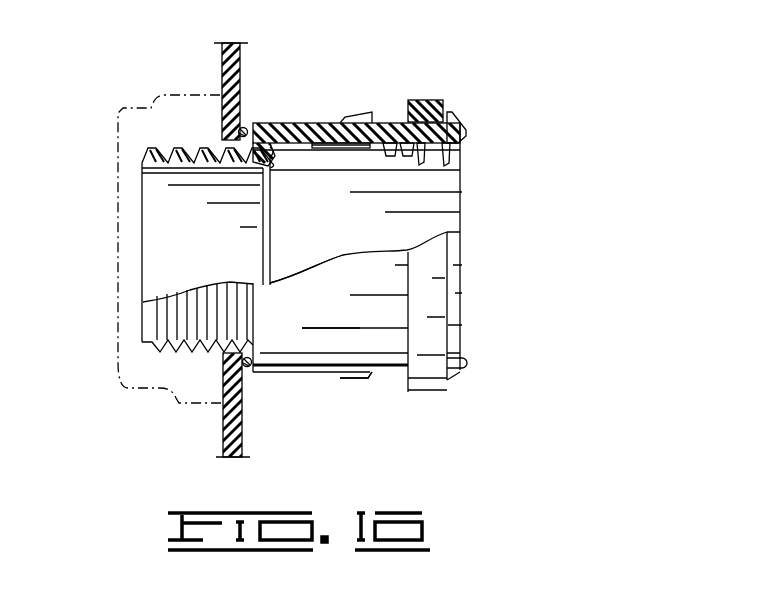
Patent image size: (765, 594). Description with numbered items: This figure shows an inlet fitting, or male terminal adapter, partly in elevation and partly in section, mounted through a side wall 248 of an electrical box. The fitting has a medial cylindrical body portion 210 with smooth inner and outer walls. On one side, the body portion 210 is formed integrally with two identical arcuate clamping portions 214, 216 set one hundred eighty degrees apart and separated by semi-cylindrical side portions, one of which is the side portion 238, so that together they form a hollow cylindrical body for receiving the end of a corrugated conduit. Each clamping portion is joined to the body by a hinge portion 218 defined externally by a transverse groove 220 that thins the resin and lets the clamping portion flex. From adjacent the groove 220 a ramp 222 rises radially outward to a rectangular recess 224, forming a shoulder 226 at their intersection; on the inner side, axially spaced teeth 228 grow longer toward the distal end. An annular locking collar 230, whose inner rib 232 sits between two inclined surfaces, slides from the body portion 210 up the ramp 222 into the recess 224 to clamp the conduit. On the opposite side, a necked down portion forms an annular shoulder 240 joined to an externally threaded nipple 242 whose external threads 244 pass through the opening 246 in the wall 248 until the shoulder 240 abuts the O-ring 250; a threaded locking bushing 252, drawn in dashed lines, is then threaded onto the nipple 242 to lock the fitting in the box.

The medial cylindrical body portion 210 is at (283, 128).
The clamping portion 214 is at (470, 117).
The clamping portion 216 is at (470, 370).
The hinge portion 218 is at (309, 128).
The groove 220 is at (329, 125).
The ramp 222 is at (355, 118).
The recess 224 is at (412, 115).
The shoulder 226 is at (402, 121).
The teeth 228 is at (447, 157).
The locking collar 230 is at (445, 110).
The rib 232 is at (425, 100).
The semi-cylindrical side portion 238 is at (380, 280).
The annular shoulder 240 is at (271, 160).
The externally threaded nipple 242 is at (180, 165).
The external threads 244 is at (183, 343).
The opening 246 is at (223, 143).
The side wall of electrical box 248 is at (228, 43).
The O-ring 250 is at (246, 368).
The threaded locking bushing 252 is at (130, 368).